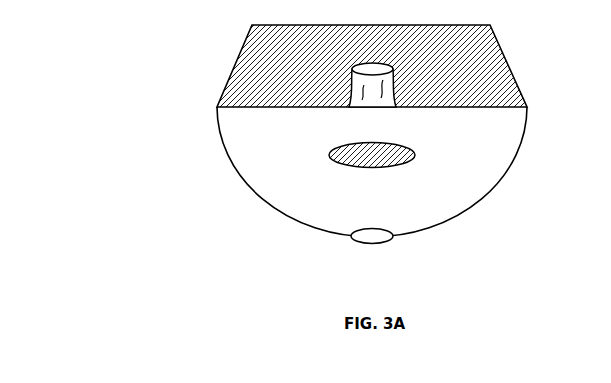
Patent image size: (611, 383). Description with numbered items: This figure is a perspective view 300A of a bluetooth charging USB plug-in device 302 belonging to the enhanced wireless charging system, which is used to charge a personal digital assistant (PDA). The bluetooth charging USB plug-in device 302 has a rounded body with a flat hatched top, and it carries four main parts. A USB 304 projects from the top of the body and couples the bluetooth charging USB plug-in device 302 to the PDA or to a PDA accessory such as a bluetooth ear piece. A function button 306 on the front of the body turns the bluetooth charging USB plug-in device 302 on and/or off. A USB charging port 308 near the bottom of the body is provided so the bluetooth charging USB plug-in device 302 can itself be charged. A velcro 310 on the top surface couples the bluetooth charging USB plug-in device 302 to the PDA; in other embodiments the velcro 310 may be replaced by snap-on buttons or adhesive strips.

The perspective view 300A is at (174, 324).
The bluetooth charging USB plug-in device 302 is at (508, 170).
The USB 304 is at (393, 72).
The function button 306 is at (329, 156).
The USB charging port 308 is at (357, 243).
The velcro 310 is at (244, 43).